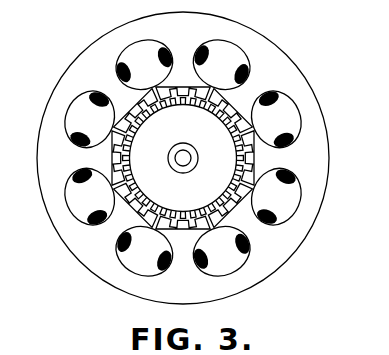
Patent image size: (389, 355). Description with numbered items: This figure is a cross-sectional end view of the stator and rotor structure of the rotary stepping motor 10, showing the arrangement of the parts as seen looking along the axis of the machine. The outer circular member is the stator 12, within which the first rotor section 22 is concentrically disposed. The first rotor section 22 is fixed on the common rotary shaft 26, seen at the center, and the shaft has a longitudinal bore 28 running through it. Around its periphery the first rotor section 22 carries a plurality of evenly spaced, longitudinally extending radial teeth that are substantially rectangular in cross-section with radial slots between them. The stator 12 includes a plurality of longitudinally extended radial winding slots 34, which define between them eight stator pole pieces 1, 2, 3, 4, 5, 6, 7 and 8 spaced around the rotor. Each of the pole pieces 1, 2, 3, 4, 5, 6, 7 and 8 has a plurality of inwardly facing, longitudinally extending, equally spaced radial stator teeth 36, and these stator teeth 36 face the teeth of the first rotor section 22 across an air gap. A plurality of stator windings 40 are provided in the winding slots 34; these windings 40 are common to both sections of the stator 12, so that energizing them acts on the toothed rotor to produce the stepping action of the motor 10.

The rotary stepping motor 10 is at (36, 80).
The stator 12 is at (198, 31).
The first rotor section 22 is at (183, 158).
The rotary shaft 26 is at (191, 145).
The longitudinal bore 28 is at (198, 159).
The winding slots 34 is at (153, 74).
The stator teeth 36 is at (183, 103).
The stator windings 40 is at (82, 95).
The stator pole piece 1 is at (183, 76).
The stator pole piece 2 is at (233, 105).
The stator pole piece 3 is at (268, 158).
The stator pole piece 4 is at (234, 212).
The stator pole piece 5 is at (183, 241).
The stator pole piece 6 is at (135, 209).
The stator pole piece 7 is at (104, 158).
The stator pole piece 8 is at (132, 105).